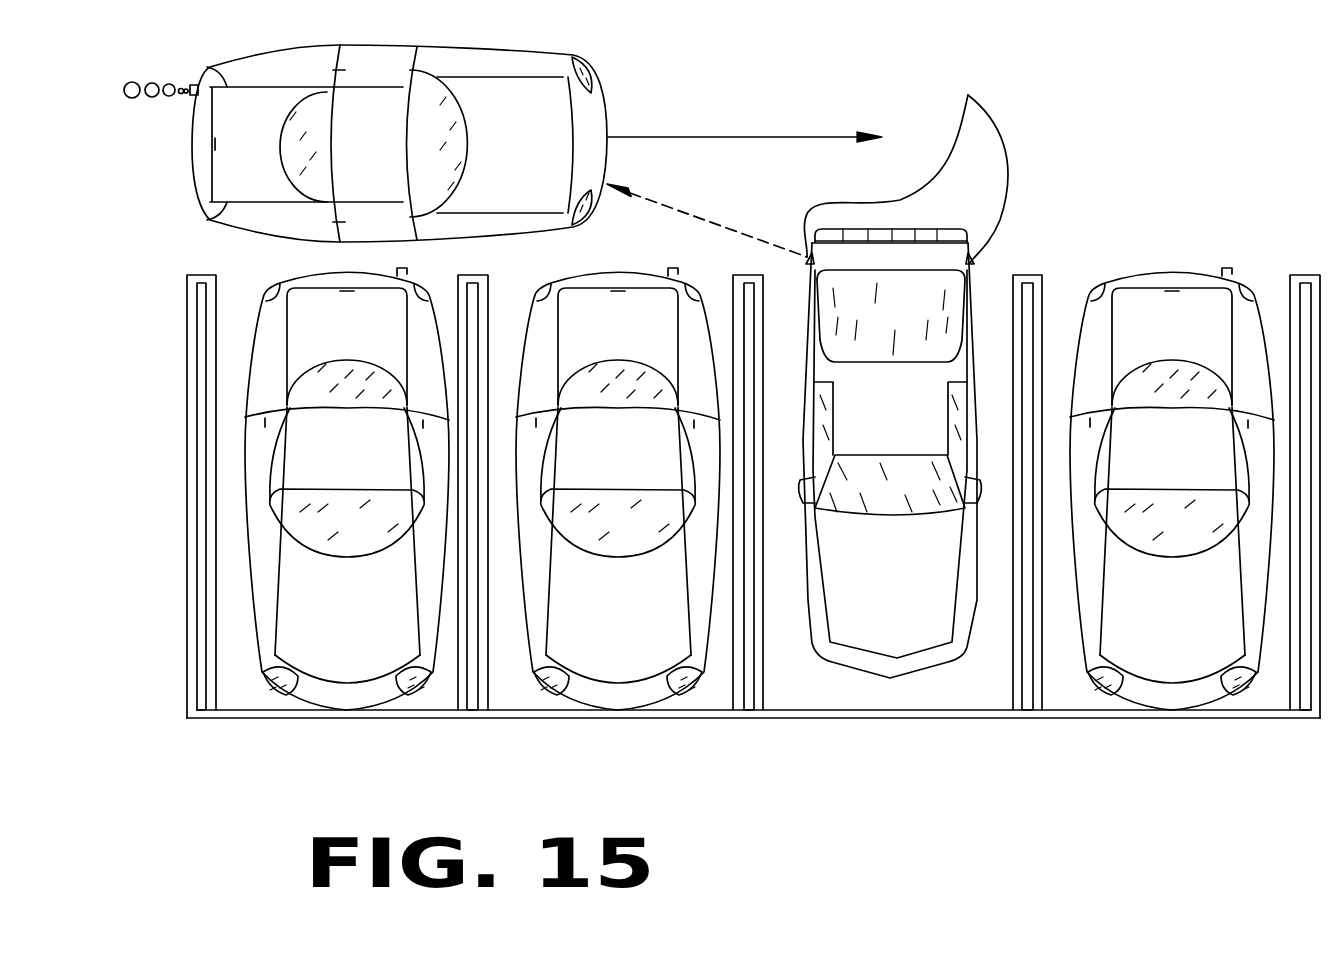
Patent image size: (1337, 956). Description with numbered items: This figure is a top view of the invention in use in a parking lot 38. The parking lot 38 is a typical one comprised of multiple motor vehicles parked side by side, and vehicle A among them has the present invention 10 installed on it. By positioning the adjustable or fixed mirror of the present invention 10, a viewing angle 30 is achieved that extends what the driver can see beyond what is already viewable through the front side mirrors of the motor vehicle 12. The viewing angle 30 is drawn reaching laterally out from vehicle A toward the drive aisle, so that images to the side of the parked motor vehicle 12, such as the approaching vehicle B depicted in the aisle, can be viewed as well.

The present invention 10 is at (906, 155).
The motor vehicle 12 is at (507, 143).
The viewing angle 30 is at (733, 232).
The parking lot 38 is at (1238, 183).